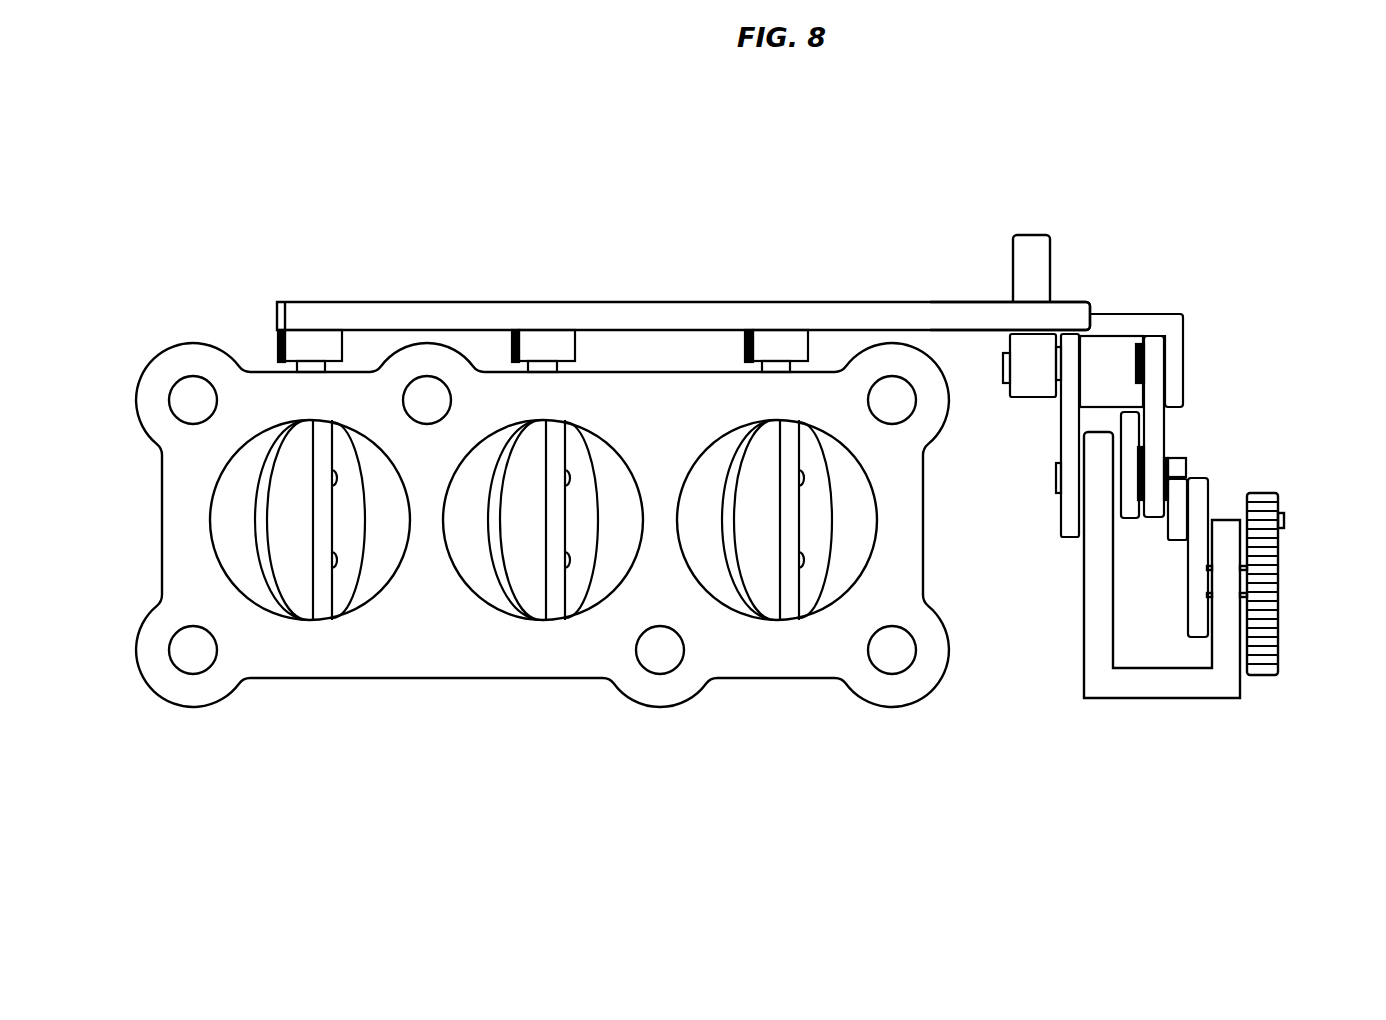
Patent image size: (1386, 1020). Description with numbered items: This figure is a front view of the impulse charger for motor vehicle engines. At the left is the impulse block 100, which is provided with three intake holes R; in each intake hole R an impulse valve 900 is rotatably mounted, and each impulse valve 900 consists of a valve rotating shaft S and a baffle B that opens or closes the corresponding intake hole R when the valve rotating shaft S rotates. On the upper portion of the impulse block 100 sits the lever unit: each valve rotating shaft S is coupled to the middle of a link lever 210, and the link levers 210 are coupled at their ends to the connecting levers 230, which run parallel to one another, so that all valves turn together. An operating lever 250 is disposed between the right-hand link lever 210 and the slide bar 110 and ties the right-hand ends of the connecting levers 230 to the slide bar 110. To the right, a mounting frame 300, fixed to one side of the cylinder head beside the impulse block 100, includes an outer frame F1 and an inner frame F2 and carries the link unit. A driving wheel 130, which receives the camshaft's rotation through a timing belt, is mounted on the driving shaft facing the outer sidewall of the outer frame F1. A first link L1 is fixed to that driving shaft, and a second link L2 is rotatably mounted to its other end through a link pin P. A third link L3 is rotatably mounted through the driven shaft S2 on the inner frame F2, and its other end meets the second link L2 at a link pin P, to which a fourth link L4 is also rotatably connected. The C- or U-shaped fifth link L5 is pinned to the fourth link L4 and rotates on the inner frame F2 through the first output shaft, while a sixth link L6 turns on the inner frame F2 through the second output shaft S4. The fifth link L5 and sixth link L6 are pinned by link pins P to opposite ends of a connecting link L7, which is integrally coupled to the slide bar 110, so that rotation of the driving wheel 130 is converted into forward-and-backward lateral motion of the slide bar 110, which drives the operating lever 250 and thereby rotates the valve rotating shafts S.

The impulse block 100 is at (625, 668).
The slide bar 110 is at (1032, 247).
The driving wheel 130 is at (1263, 638).
The link lever 210 is at (313, 342).
The connecting lever 230 is at (610, 313).
The operating lever 250 is at (895, 317).
The mounting frame 300 is at (1160, 609).
The impulse valve 900 is at (555, 521).
The intake hole R is at (245, 556).
The baffle B is at (297, 580).
The valve rotating shaft S is at (323, 602).
The driven shaft S2 is at (1112, 507).
The second output shaft S4 is at (1056, 473).
The link pin P is at (1003, 370).
The first link L1 is at (1195, 637).
The second link L2 is at (1177, 487).
The third link L3 is at (1130, 412).
The fourth link L4 is at (1157, 425).
The fifth link L5 is at (1147, 322).
The sixth link L6 is at (1061, 522).
The connecting link L7 is at (1020, 387).
The outer frame F1 is at (1224, 527).
The inner frame F2 is at (1095, 663).